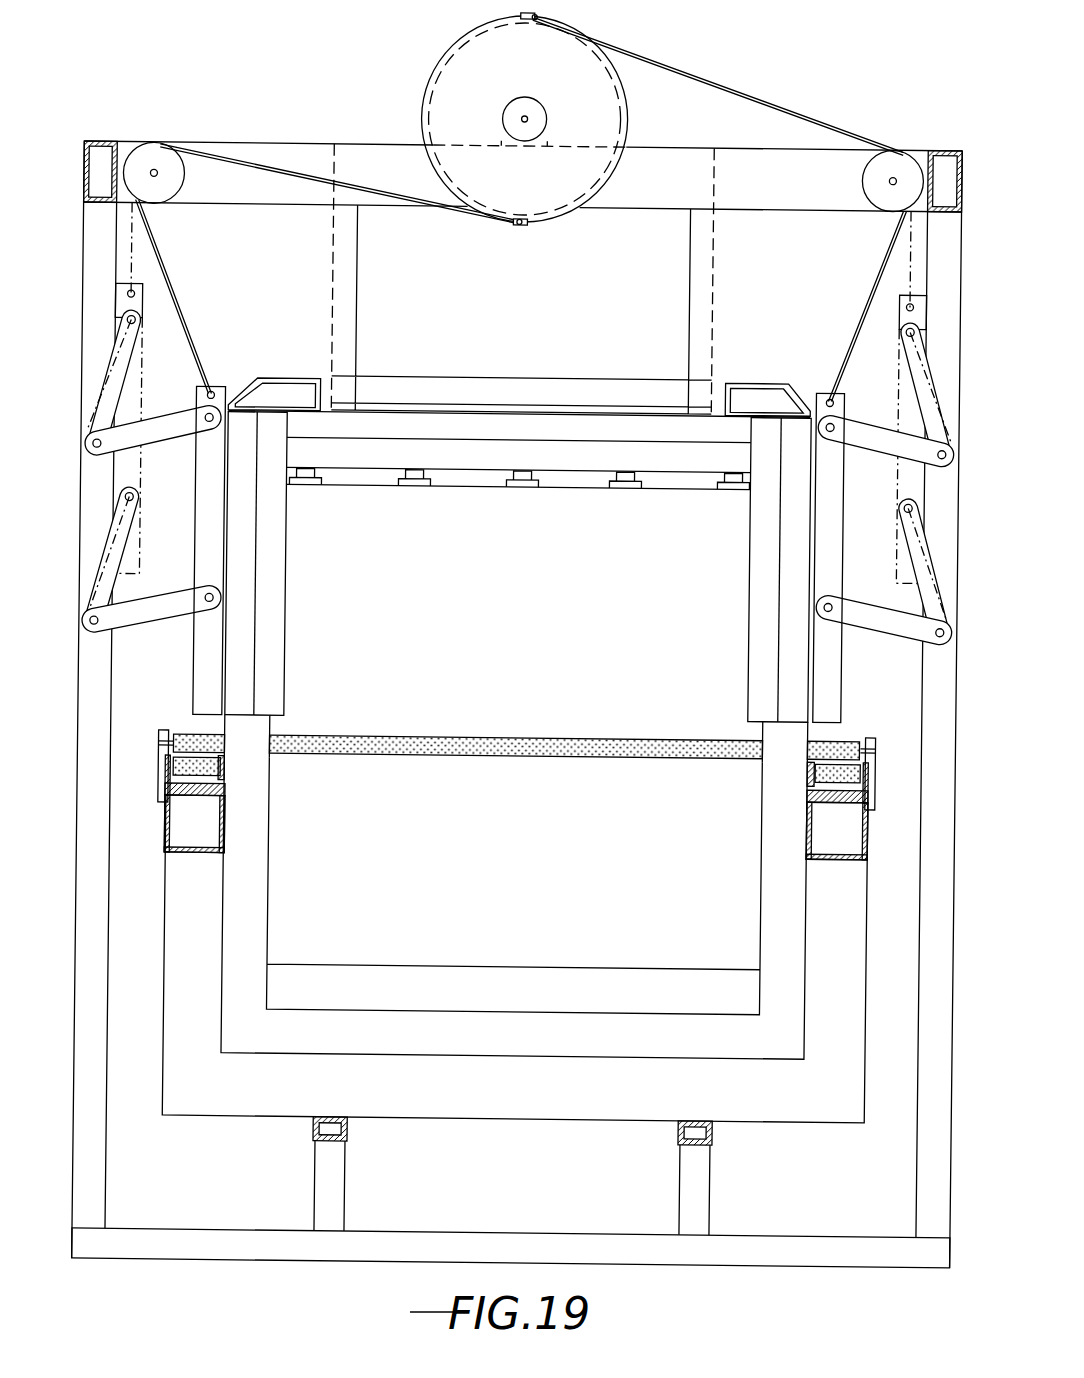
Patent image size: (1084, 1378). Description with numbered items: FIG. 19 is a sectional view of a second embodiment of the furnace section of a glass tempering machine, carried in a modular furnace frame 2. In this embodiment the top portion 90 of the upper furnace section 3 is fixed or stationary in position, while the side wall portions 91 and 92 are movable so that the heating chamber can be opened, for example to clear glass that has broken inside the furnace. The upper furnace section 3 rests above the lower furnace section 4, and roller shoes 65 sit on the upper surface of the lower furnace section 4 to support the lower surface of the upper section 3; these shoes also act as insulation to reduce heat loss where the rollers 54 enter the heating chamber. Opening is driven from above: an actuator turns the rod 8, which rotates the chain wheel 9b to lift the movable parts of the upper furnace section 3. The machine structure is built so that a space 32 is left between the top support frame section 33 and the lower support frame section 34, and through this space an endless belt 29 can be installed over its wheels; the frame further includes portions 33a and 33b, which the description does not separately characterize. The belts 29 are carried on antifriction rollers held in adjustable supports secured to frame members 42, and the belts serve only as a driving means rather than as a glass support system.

The modular furnace frame 2 is at (818, 99).
The upper furnace section 3 is at (770, 333).
The lower furnace section 4 is at (285, 1130).
The rod 8 is at (541, 119).
The chain wheel 9b is at (573, 54).
The endless belt 29 is at (184, 754).
The space 32 is at (151, 1057).
The top support frame section 33 is at (96, 947).
The frame top beam 33a is at (287, 142).
The frame base 33b is at (283, 1255).
The lower support frame section 34 is at (193, 1011).
The frame member 42 is at (203, 836).
The roller 54 is at (570, 744).
The roller shoe 65 is at (255, 741).
The top portion 90 is at (480, 458).
The side wall portion 91 is at (276, 596).
The side wall portion 92 is at (762, 597).